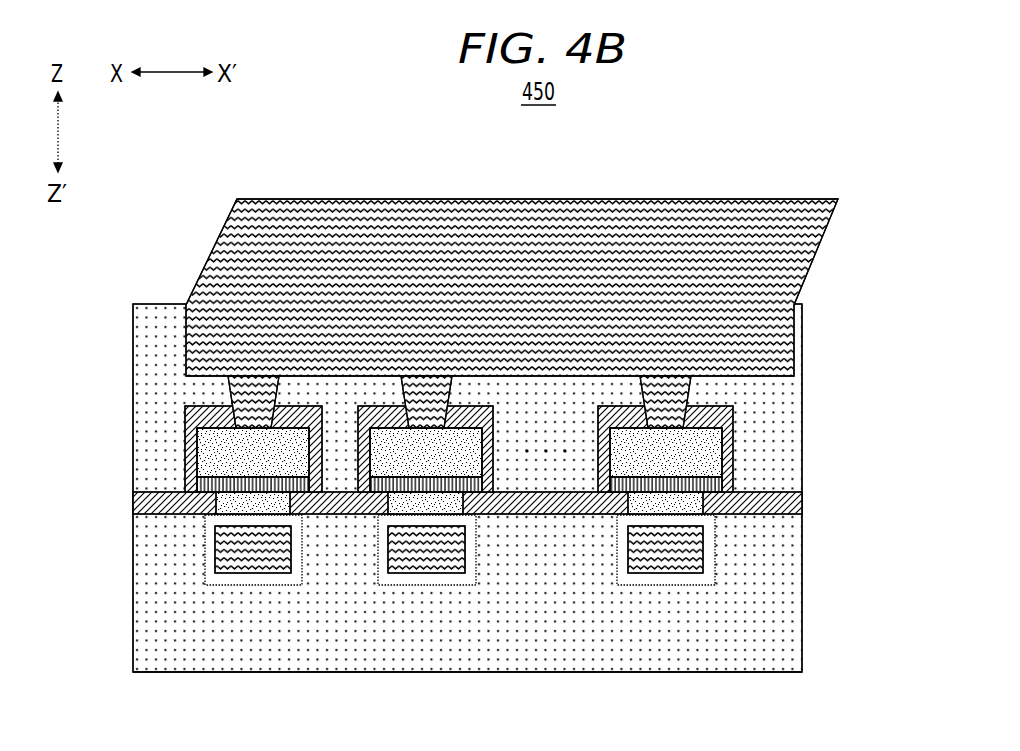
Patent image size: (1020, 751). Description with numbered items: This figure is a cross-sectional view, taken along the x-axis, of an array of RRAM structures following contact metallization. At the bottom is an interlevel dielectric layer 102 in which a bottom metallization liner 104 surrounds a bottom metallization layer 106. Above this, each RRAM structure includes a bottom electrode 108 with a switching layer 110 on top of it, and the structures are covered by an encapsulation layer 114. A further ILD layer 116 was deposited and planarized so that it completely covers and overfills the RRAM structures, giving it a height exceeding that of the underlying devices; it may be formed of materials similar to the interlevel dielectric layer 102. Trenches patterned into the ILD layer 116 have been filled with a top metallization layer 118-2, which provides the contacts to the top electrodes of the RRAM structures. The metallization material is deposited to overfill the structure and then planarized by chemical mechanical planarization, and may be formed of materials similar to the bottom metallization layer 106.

The interlevel dielectric layer 102 is at (257, 672).
The bottom metallization liner 104 is at (395, 580).
The bottom metallization layer 106 is at (448, 567).
The bottom electrode 108 is at (698, 503).
The switching layer 110 is at (732, 481).
The encapsulation layer 114 is at (133, 500).
The ILD layer 116 is at (133, 403).
The top metallization layer 118-2 is at (615, 199).